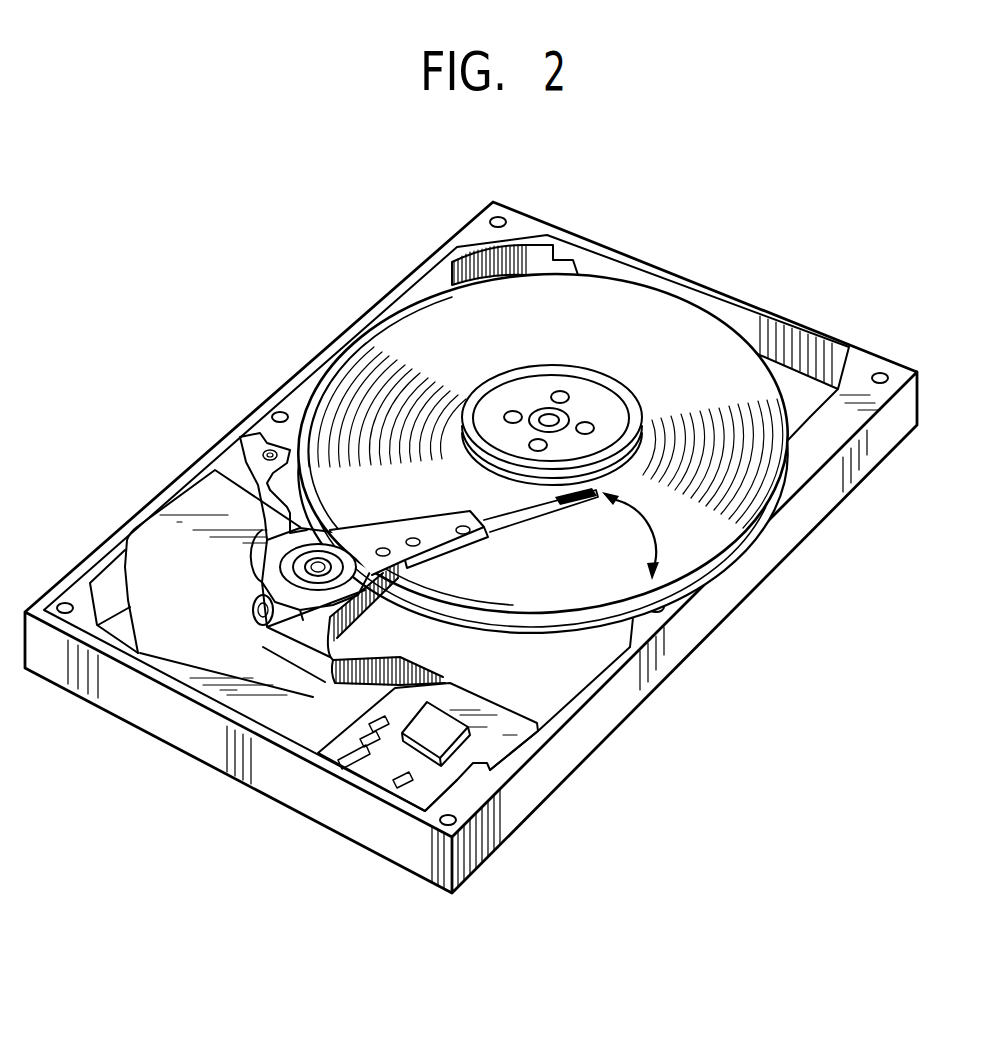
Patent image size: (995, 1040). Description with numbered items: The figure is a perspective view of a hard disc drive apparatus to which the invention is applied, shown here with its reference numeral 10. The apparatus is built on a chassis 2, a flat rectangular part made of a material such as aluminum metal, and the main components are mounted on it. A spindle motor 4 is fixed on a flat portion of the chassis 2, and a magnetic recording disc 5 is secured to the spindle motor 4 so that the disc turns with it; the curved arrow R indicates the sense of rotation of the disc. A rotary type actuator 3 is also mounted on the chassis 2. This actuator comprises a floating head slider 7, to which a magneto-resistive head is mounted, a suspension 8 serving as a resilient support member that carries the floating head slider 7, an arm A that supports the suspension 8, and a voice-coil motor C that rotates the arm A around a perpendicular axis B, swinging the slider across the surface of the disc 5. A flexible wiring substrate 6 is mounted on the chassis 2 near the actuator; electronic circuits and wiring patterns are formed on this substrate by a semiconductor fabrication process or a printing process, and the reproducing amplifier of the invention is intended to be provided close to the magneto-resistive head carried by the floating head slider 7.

The chassis 2 is at (800, 523).
The rotary type actuator 3 is at (543, 516).
The spindle motor 4 is at (583, 397).
The magnetic recording disc 5 is at (680, 363).
The flexible wiring substrate 6 is at (438, 778).
The floating head slider 7 is at (597, 500).
The suspension 8 is at (580, 493).
The hard disk drive 10 is at (471, 591).
The arm A is at (373, 543).
The perpendicular axis B is at (313, 560).
The voice-coil motor C is at (178, 626).
The disk rotation direction R is at (635, 536).